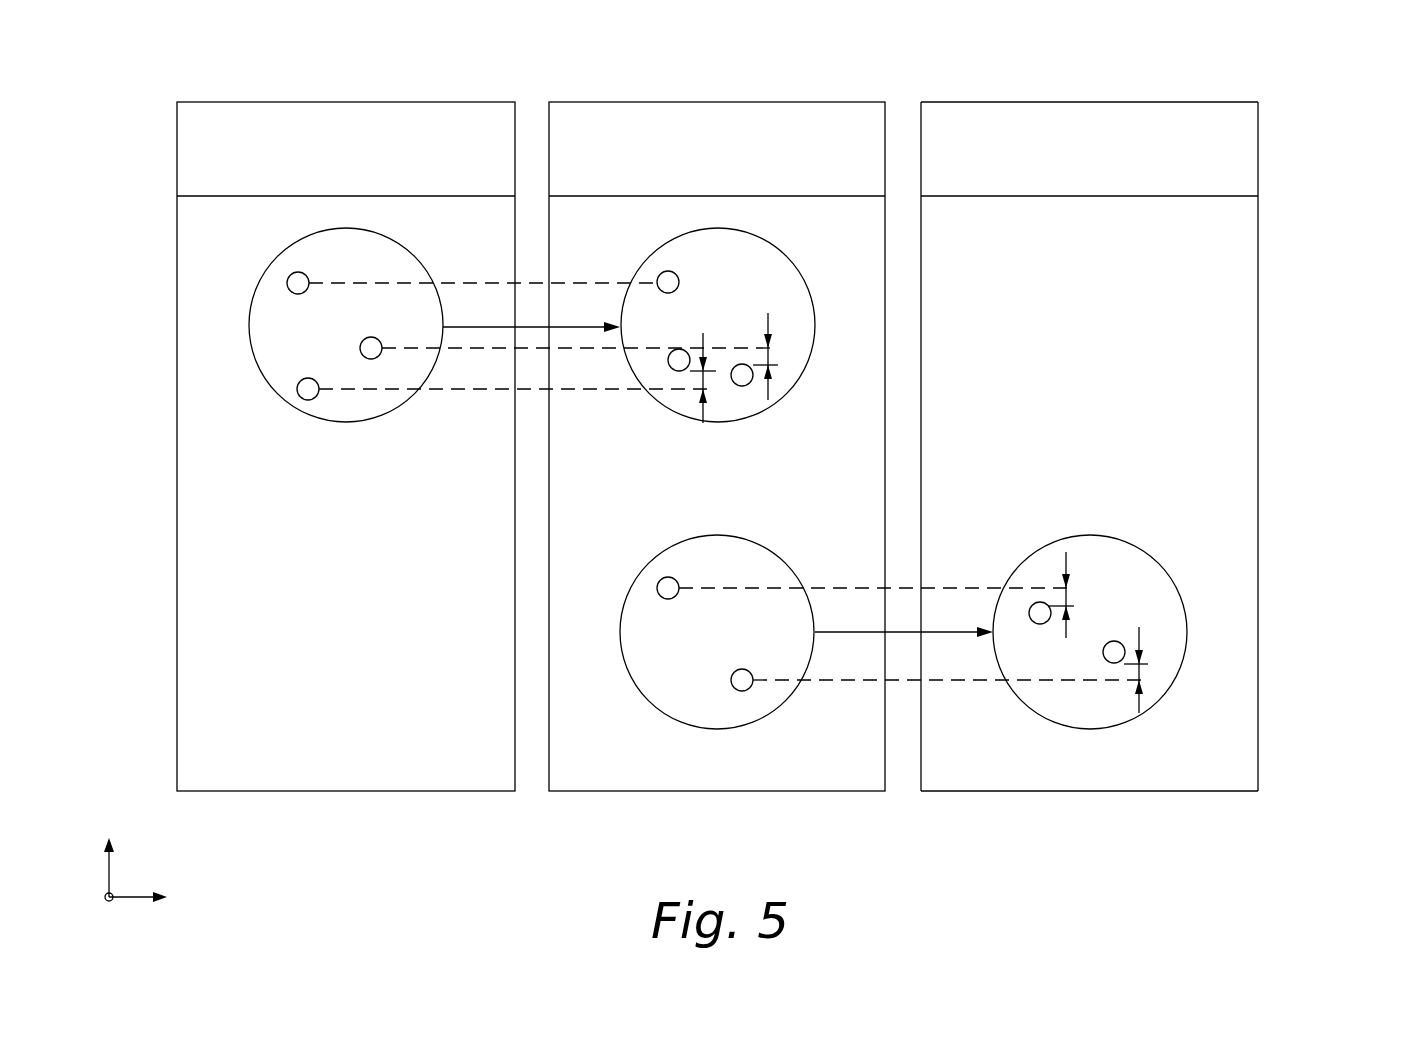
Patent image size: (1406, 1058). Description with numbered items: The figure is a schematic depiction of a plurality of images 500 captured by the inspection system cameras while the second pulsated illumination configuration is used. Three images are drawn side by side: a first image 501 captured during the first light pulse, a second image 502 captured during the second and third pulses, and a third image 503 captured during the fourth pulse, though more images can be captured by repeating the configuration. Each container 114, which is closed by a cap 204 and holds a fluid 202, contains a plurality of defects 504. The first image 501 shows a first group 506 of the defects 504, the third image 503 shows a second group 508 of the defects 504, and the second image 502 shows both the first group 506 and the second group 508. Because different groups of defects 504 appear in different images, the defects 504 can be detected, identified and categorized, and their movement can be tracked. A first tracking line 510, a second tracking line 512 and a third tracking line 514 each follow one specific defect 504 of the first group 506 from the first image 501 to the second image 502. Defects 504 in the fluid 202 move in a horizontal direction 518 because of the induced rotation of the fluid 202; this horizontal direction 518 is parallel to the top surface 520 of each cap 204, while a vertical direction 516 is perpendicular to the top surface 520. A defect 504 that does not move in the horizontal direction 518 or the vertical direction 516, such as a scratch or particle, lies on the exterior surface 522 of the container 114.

The plurality of images 500 is at (1306, 91).
The container 114 is at (1278, 132).
The fluid 202 is at (1228, 323).
The cap 204 is at (1125, 115).
The top surface 520 is at (1030, 100).
The exterior surface 522 is at (1258, 436).
The first image 501 is at (345, 792).
The second image 502 is at (717, 792).
The third image 503 is at (1148, 455).
The defect 504 is at (300, 280).
The first group 506 is at (412, 252).
The second group 508 is at (780, 550).
The first tracking line 510 is at (575, 282).
The second tracking line 512 is at (576, 348).
The third tracking line 514 is at (577, 390).
The vertical direction 516 is at (108, 875).
The horizontal direction 518 is at (135, 898).